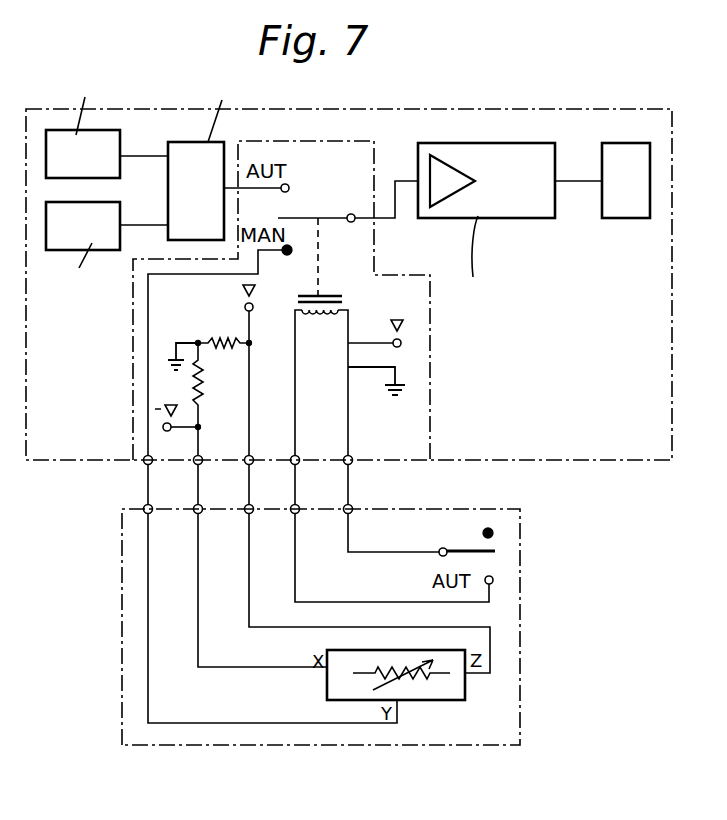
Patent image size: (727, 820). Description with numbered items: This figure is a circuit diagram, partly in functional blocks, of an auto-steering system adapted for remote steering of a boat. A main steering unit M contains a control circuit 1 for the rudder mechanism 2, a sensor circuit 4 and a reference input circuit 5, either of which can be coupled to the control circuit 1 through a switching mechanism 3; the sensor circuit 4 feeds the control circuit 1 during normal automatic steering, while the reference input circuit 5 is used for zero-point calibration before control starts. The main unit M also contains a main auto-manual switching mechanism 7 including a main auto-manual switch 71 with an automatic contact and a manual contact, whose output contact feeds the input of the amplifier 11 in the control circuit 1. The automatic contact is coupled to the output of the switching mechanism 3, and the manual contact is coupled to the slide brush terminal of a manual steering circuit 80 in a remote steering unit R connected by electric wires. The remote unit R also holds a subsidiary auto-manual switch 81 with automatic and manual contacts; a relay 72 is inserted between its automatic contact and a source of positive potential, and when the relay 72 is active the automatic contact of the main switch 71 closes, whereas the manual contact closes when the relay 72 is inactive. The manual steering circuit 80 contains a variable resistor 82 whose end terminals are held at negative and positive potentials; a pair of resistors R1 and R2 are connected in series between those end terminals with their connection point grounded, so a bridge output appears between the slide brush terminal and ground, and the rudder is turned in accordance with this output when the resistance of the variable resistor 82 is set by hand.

The control circuit 1 is at (517, 218).
The rudder mechanism 2 is at (626, 180).
The switching mechanism 3 is at (226, 151).
The sensor circuit 4 is at (77, 256).
The reference input circuit 5 is at (96, 107).
The main A-M switching mechanism 7 is at (318, 141).
The amplifier 11 is at (444, 192).
The main A-M switch 71 is at (300, 219).
The relay 72 is at (322, 315).
The manual steering circuit 80 is at (460, 700).
The subsidiary A-M switch 81 is at (487, 556).
The variable resistor 82 is at (419, 675).
The main steering unit M is at (486, 109).
The remote steering unit R is at (520, 611).
The resistor R1 is at (205, 339).
The resistor R2 is at (204, 372).